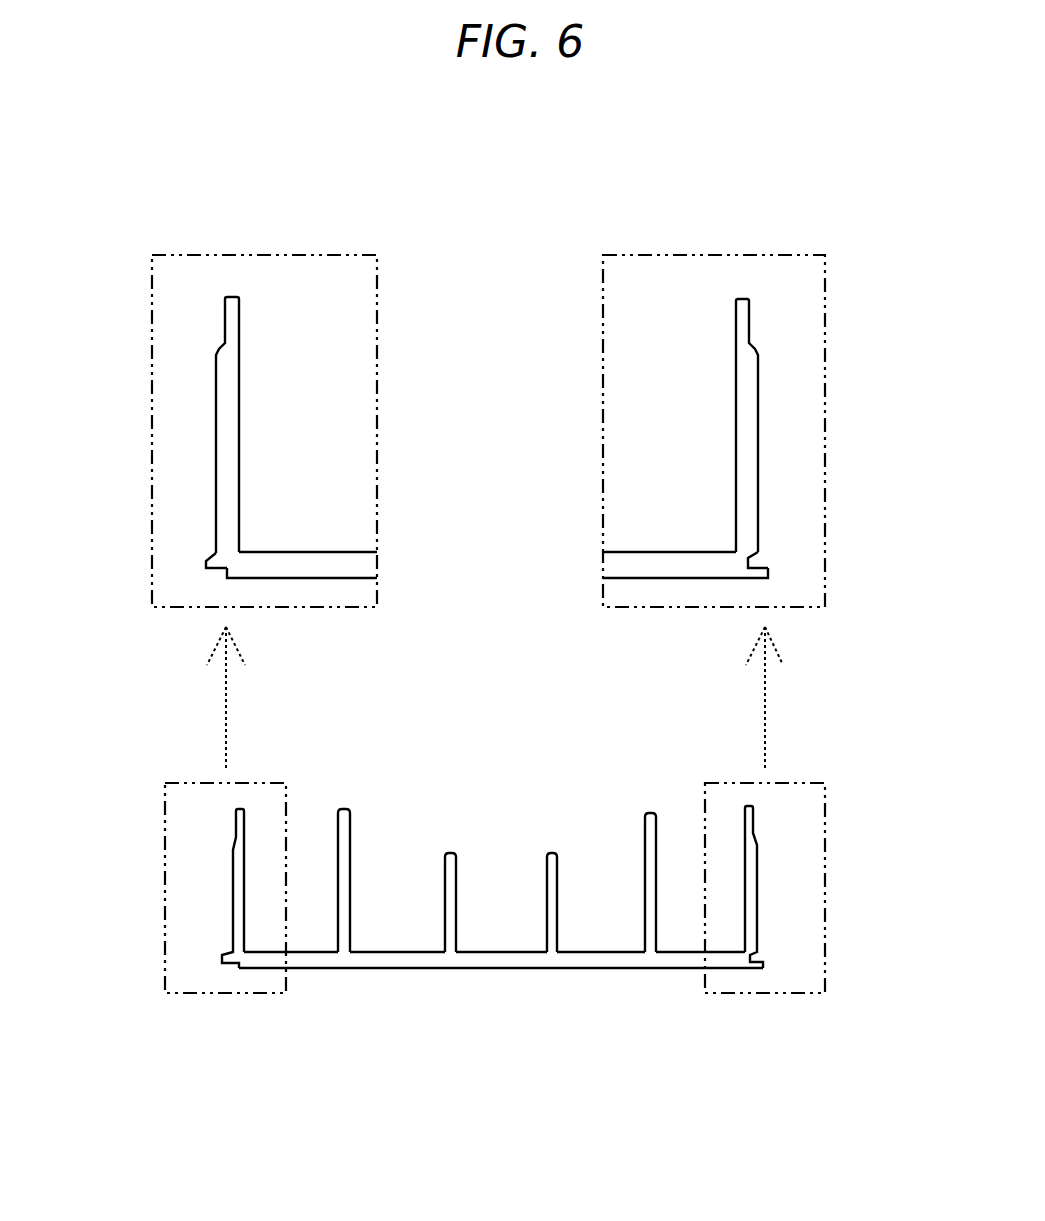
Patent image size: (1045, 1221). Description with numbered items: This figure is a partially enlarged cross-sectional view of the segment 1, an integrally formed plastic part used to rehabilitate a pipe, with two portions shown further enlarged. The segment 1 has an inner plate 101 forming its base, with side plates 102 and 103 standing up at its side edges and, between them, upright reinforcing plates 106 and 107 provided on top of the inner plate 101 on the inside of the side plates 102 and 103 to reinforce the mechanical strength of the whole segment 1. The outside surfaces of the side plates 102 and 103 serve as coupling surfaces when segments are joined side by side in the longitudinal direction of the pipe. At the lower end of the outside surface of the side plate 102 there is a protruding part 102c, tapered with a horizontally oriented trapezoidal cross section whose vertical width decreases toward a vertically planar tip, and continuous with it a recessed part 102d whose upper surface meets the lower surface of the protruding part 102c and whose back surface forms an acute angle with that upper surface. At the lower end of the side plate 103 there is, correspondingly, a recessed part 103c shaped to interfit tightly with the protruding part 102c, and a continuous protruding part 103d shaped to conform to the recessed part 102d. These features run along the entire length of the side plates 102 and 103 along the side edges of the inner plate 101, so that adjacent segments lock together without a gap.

The segment 1 is at (590, 967).
The inner plate 101 is at (445, 964).
The side plate 102 is at (233, 852).
The protruding part 102c is at (203, 562).
The recessed part 102d is at (227, 574).
The side plate 103 is at (757, 848).
The recessed part 103c is at (750, 560).
The protruding part 103d is at (770, 572).
The reinforcing plate 106 is at (342, 838).
The reinforcing plate 107 is at (552, 853).